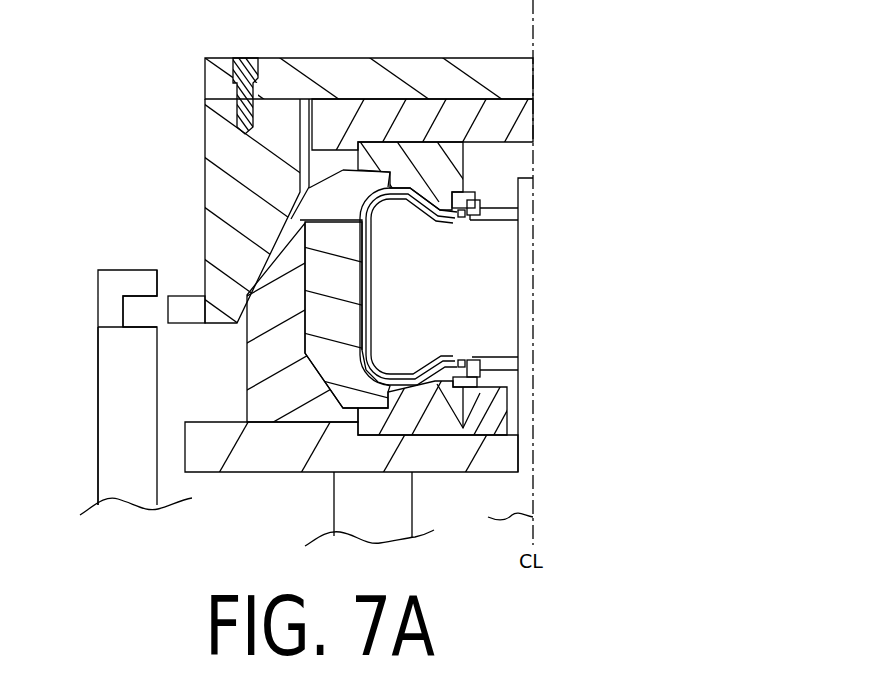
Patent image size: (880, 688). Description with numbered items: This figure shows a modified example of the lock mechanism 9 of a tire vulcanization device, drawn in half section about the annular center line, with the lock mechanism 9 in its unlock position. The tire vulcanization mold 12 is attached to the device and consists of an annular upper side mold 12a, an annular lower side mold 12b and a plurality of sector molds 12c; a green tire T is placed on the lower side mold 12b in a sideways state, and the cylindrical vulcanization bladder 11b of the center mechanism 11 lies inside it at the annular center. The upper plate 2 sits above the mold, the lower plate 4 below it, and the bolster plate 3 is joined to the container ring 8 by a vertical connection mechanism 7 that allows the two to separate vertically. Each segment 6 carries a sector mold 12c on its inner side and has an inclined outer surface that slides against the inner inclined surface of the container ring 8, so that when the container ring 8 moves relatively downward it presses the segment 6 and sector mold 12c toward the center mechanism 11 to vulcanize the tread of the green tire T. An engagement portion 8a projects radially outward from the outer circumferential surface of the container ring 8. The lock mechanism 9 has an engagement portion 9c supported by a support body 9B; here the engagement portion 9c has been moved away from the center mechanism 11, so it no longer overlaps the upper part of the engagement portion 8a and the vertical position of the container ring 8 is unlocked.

The upper plate 2 is at (523, 125).
The bolster plate 3 is at (212, 80).
The lower plate 4 is at (283, 462).
The segment 6 is at (245, 403).
The vertical connection mechanism 7 is at (260, 80).
The container ring 8 is at (212, 147).
The engagement portion 8a is at (190, 318).
The lock mechanism 9 is at (101, 266).
The engagement portion 9c is at (139, 278).
The support body 9B is at (102, 442).
The center mechanism 11 is at (485, 325).
The vulcanization bladder 11b is at (380, 363).
The tire vulcanization mold 12 is at (379, 290).
The upper side mold 12a is at (417, 150).
The lower side mold 12b is at (437, 430).
The sector mold 12c is at (350, 232).
The green tire T is at (368, 290).